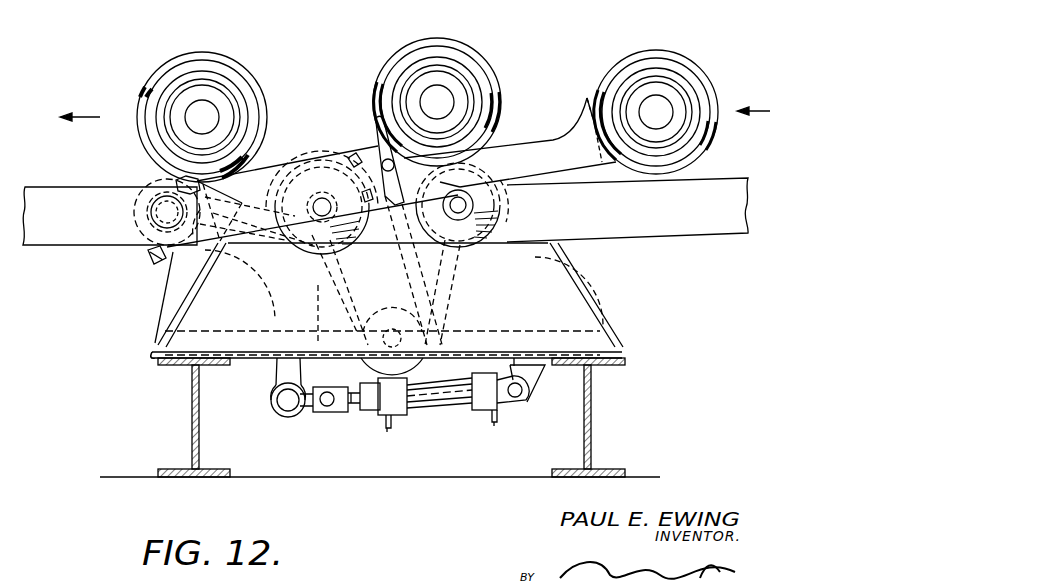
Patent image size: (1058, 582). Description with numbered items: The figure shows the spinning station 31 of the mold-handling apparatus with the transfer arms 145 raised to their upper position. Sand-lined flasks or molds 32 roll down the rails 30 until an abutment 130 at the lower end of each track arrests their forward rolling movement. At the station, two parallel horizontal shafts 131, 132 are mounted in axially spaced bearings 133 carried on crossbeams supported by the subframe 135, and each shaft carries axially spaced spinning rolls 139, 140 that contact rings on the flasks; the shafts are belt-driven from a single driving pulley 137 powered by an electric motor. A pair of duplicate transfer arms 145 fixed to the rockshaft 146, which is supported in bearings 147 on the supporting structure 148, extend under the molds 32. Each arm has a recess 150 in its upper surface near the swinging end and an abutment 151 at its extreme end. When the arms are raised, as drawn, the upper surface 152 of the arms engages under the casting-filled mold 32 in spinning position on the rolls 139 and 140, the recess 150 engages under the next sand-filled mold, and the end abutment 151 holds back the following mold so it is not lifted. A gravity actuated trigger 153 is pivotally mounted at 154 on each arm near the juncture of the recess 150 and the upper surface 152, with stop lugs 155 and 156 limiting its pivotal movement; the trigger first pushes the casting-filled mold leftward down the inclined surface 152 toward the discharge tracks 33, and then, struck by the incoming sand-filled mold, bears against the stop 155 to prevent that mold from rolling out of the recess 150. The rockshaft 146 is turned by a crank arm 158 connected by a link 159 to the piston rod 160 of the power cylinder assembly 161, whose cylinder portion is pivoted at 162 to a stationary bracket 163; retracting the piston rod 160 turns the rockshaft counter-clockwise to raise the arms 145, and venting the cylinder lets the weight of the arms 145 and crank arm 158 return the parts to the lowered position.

The rails 30 is at (711, 222).
The spinning station 31 is at (122, 408).
The sand-lined flask or mold 32 is at (253, 61).
The discharge rails or tracks 33 is at (46, 228).
The abutment 130 is at (512, 165).
The horizontal shaft 131 is at (305, 249).
The horizontal shaft 132 is at (474, 197).
The bearings 133 is at (283, 238).
The subframe 135 is at (192, 443).
The driving pulley 137 is at (378, 370).
The spinning roll 139 is at (322, 246).
The spinning roll 140 is at (476, 240).
The transfer arms 145 is at (265, 168).
The rockshaft 146 is at (167, 212).
The bearings 147 is at (180, 183).
The supporting structure 148 is at (160, 349).
The recess 150 is at (492, 150).
The abutment 151 is at (586, 128).
The upper surface 152 is at (345, 151).
The gravity actuated trigger 153 is at (385, 134).
The pivot 154 is at (390, 172).
The stop lug 155 is at (349, 158).
The stop lug 156 is at (363, 196).
The crank arm 158 is at (274, 381).
The link 159 is at (300, 412).
The piston rod 160 is at (357, 402).
The power cylinder assembly 161 is at (446, 420).
The pivot 162 is at (521, 397).
The stationary bracket 163 is at (527, 370).